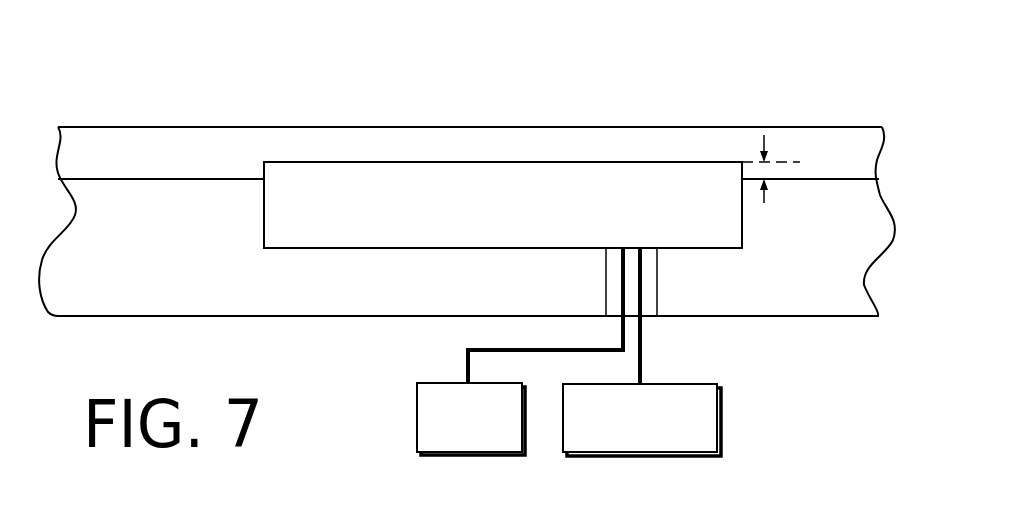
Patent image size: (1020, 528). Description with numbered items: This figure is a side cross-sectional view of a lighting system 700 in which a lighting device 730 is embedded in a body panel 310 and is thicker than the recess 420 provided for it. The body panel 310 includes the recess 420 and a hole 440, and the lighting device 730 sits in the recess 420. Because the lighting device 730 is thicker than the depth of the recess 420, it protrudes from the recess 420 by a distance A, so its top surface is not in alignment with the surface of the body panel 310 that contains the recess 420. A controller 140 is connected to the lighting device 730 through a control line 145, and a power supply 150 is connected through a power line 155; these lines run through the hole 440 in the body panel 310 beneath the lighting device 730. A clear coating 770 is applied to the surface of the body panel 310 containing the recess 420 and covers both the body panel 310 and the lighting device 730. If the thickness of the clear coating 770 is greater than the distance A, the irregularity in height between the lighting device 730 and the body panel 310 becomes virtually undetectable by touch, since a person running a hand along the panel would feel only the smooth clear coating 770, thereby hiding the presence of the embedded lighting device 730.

The lighting system 700 is at (697, 90).
The clear coating 770 is at (126, 127).
The body panel 310 is at (108, 318).
The lighting device 730 is at (388, 248).
The recess 420 is at (274, 212).
The hole 440 is at (658, 280).
The power line 155 is at (466, 366).
The control line 145 is at (643, 350).
The power supply 150 is at (417, 420).
The controller 140 is at (721, 417).
The distance A is at (797, 168).